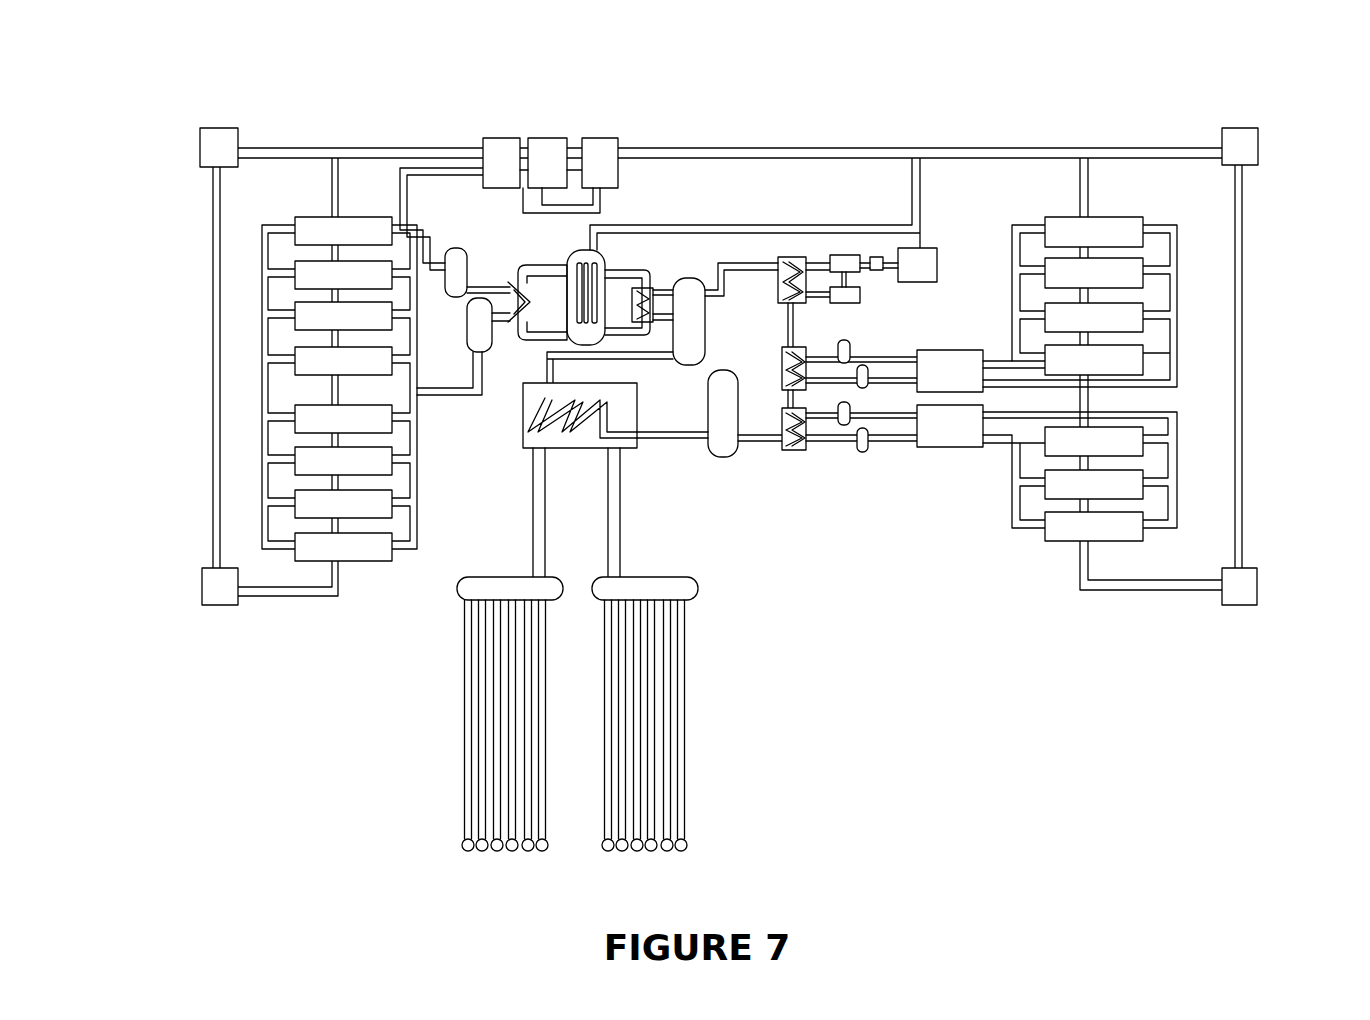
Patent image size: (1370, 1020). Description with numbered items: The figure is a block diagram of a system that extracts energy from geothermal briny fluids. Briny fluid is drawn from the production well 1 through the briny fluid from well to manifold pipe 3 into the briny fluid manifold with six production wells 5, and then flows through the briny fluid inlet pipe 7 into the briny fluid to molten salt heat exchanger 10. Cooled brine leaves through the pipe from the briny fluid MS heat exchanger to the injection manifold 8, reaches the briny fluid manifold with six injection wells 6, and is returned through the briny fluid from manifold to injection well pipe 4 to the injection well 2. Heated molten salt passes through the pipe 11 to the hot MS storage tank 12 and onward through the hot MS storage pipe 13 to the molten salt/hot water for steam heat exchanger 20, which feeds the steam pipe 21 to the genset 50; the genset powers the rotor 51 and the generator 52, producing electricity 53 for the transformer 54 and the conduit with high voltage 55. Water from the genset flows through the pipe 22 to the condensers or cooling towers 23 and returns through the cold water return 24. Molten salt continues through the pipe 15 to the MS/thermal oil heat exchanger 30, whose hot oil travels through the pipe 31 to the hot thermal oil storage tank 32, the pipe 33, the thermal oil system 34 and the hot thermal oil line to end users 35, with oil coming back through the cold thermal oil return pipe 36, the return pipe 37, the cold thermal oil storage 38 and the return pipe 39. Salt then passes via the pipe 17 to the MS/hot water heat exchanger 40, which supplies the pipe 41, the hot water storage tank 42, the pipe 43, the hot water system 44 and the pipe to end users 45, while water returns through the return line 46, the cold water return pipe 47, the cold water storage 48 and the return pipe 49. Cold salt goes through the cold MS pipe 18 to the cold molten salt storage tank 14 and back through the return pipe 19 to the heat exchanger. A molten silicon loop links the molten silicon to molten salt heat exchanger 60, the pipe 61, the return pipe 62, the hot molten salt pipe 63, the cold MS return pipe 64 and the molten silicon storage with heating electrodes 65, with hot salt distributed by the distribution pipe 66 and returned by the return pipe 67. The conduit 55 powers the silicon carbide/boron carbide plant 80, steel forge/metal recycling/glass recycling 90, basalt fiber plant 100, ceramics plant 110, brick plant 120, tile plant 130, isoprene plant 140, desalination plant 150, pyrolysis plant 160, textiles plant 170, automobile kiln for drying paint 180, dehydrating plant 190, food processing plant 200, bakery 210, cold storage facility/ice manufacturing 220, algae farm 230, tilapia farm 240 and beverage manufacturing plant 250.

The production well 1 is at (462, 850).
The injection well 2 is at (690, 850).
The briny fluid from well to manifold pipe 3 is at (465, 705).
The briny fluid from manifold to injection well pipe 4 is at (685, 690).
The briny fluid manifold with six production wells 5 is at (462, 596).
The briny fluid manifold with six injection wells 6 is at (695, 598).
The briny fluid inlet pipe to briny fluid molten salt heat exchanger 7 is at (533, 522).
The pipe from briny fluid MS heat exchanger to injection manifold 8 is at (620, 522).
The briny fluid to molten salt heat exchanger 10 is at (520, 450).
The pipe from briny fluid to MS heat exchanger to hot MS storage 11 is at (540, 375).
The hot MS storage tank 12 is at (448, 302).
The hot MS storage pipe to MS/hot water for steam heat exchanger 13 is at (743, 280).
The cold molten salt storage tank 14 is at (492, 352).
The pipe from MS to steam heat exchanger to thermal oil heat exchanger 15 is at (797, 327).
The pipe from MS/thermal oil heat exchanger to MS/hot water heat exchanger 17 is at (785, 398).
The cold MS pipe from MS/water heat exchanger to cold MS storage 18 is at (765, 448).
The return pipe cold MS storage to briny fluid/MS heat exchanger 19 is at (665, 447).
The molten salt/hot water for steam heat exchanger 20 is at (795, 255).
The steam pipe to genset 21 is at (822, 253).
The pipe carrying hot water from steam turbine to condensers or cooling towers 22 is at (850, 280).
The condensers or cooling towers 23 is at (848, 308).
The cold water return to MS/hot water for steam heat exchanger 24 is at (815, 290).
The MS/thermal oil heat exchanger 30 is at (842, 455).
The pipe hot thermal oil to hot thermal oil storage tank 31 is at (945, 447).
The hot thermal oil storage tank 32 is at (915, 352).
The pipe from hot thermal oil storage tank to thermal oil system 33 is at (857, 353).
The thermal oil system 34 is at (975, 395).
The hot thermal oil to end users 35 is at (1028, 225).
The cold thermal oil return pipe 36 is at (1183, 300).
The return pipe thermal oil system to cold thermal oil storage 37 is at (870, 458).
The cold thermal oil storage 38 is at (860, 455).
The return pipe cold thermal oil storage to MS/thermal oil heat exchanger 39 is at (833, 385).
The MS/hot water heat exchanger 40 is at (813, 445).
The pipe from MS/hot water to hot water storage tank 41 is at (822, 420).
The hot water storage tank 42 is at (842, 365).
The pipe from hot water storage tank to hot water system 43 is at (888, 420).
The hot water system 44 is at (893, 390).
The pipe hot water from system to end users 45 is at (1183, 441).
The return water from end users to hot water system 46 is at (1020, 537).
The cold water return pipe to cold water storage 47 is at (903, 355).
The cold water storage 48 is at (870, 397).
The return pipe from cold water storage to MS/hot water heat exchanger 49 is at (803, 453).
The genset 50 is at (857, 247).
The rotor 51 is at (862, 297).
The generator 52 is at (885, 253).
The electricity 53 is at (888, 272).
The transformer 54 is at (207, 128).
The conduit with high voltage to transformers and end users 55 is at (363, 147).
The molten silicon to molten salt heat exchanger 60 is at (497, 277).
The pipe from molten Si storage to molten Si/molten salt heat exchanger 61 is at (550, 142).
The molten Si return pipe to molten Si storage 62 is at (498, 322).
The hot molten salt pipe to molten Si/molten salt heat exchanger 63 is at (470, 248).
The cold MS return pipe from end users to molten salt/MSi heat exchanger 64 is at (480, 353).
The molten silicon storage with heating electrodes 65 is at (587, 245).
The hot molten salt distribution pipe to end users 66 is at (262, 267).
The cold molten salt return pipe from end users 67 is at (518, 140).
The silicon carbide/boron carbide plant 80 is at (490, 148).
The steel forge/metal recycling/glass recycling 90 is at (551, 262).
The basalt fiber plant 100 is at (598, 137).
The ceramics plant 110 is at (297, 225).
The brick plant 120 is at (297, 270).
The tile plant 130 is at (297, 316).
The isoprene plant 140 is at (297, 368).
The desalination plant 150 is at (297, 425).
The pyrolysis plant for waste recycling and algae to bio-oil 160 is at (297, 470).
The textiles plant 170 is at (297, 507).
The automobile kiln for drying paint 180 is at (310, 558).
The dehydrating plant 190 is at (1138, 228).
The food processing plant 200 is at (1138, 268).
The bakery 210 is at (1138, 316).
The cold storage facility/ice manufacturing 220 is at (1143, 361).
The algae farm 230 is at (1138, 448).
The tilapia farm 240 is at (1138, 490).
The beverage manufacturing plant 250 is at (1138, 535).